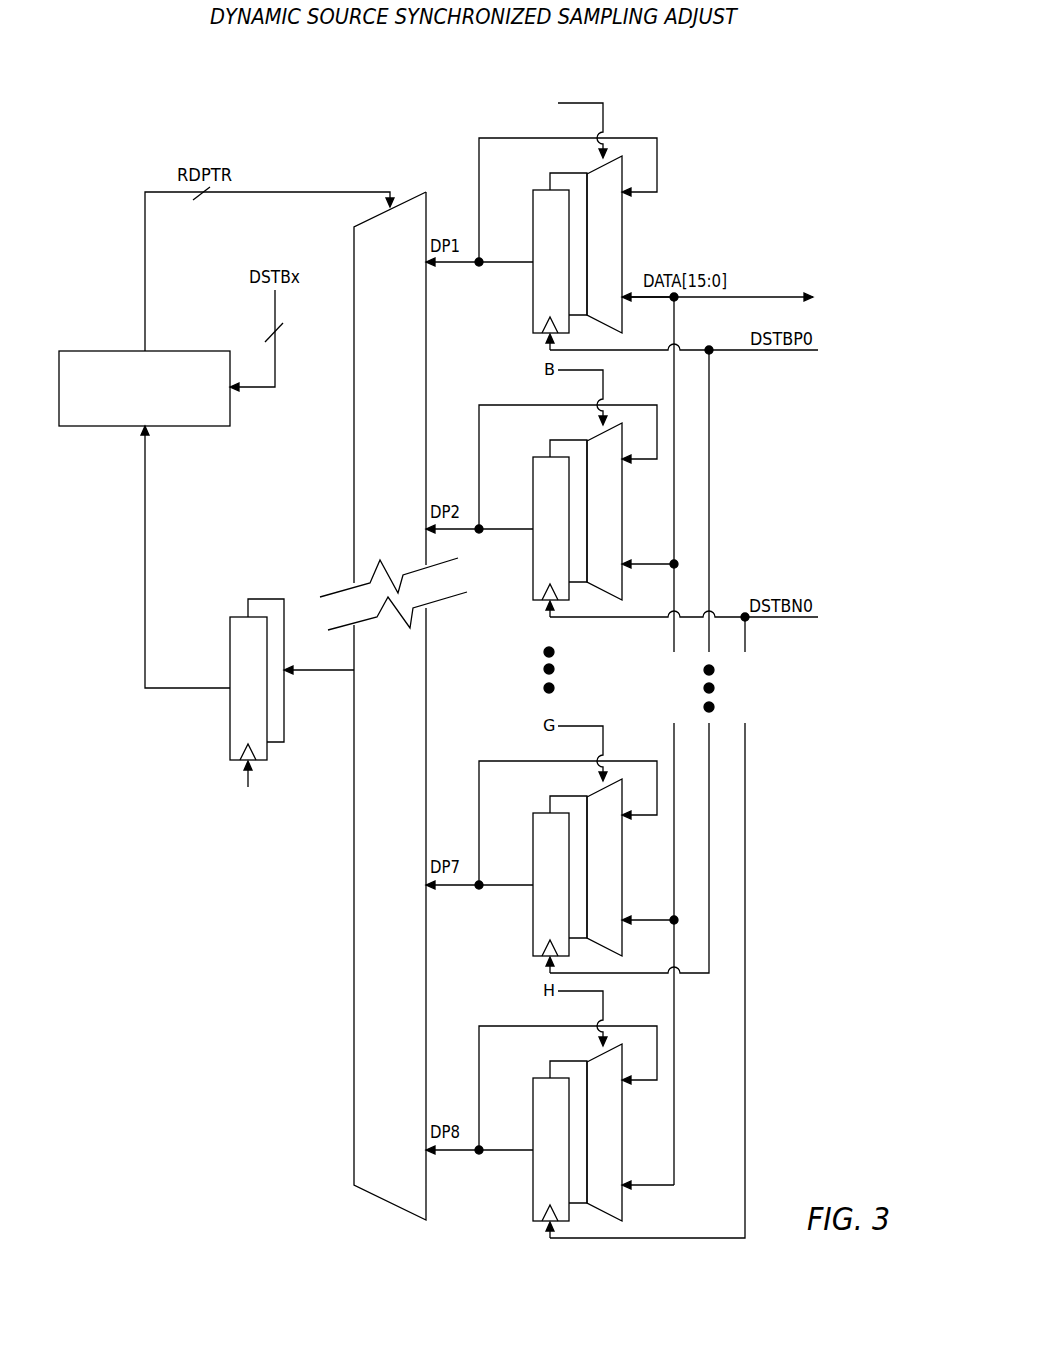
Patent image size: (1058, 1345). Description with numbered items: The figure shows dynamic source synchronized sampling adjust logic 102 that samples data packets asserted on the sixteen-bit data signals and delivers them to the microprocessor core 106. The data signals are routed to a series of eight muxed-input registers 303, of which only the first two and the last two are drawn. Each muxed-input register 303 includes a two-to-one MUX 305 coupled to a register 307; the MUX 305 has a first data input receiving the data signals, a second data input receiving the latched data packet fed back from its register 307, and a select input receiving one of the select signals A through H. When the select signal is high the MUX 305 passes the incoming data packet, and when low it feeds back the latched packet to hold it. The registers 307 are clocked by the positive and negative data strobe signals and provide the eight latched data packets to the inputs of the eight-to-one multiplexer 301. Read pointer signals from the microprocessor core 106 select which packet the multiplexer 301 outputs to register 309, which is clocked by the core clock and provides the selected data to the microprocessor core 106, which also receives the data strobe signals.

The dynamic source synchronized sampling adjust logic 102 is at (793, 166).
The microprocessor core 106 is at (132, 411).
The 8-to-1 multiplexer 301 is at (403, 363).
The muxed-input register 303 is at (585, 83).
The 2:1 MUX 305 is at (622, 240).
The register 307 is at (533, 195).
The register 309 is at (230, 622).